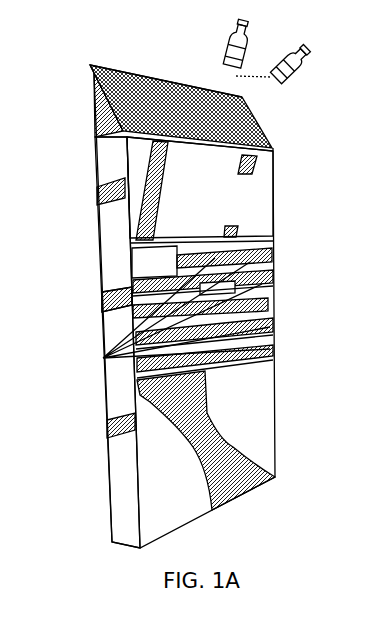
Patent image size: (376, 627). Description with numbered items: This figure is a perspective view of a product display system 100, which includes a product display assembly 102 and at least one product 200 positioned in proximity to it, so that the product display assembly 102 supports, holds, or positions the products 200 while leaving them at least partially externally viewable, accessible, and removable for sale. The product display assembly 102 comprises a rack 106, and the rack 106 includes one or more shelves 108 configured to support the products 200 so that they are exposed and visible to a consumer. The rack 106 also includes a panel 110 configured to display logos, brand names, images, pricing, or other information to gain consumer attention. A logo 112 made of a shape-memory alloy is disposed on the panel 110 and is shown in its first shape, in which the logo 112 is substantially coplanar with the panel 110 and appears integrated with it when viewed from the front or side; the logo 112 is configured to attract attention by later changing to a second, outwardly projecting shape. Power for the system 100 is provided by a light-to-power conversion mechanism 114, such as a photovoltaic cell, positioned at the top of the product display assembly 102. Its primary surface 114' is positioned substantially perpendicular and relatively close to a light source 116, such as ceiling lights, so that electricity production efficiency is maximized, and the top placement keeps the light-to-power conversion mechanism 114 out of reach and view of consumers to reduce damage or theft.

The product display system 100 is at (93, 440).
The product display assembly 102 is at (93, 180).
The rack 106 is at (113, 319).
The shelves 108 is at (276, 270).
The panel 110 is at (158, 211).
The logo 112 is at (260, 202).
The light-to-power conversion mechanism 114 is at (162, 106).
The primary surface 114' is at (166, 81).
The light source 116 is at (222, 68).
The product 200 is at (103, 358).